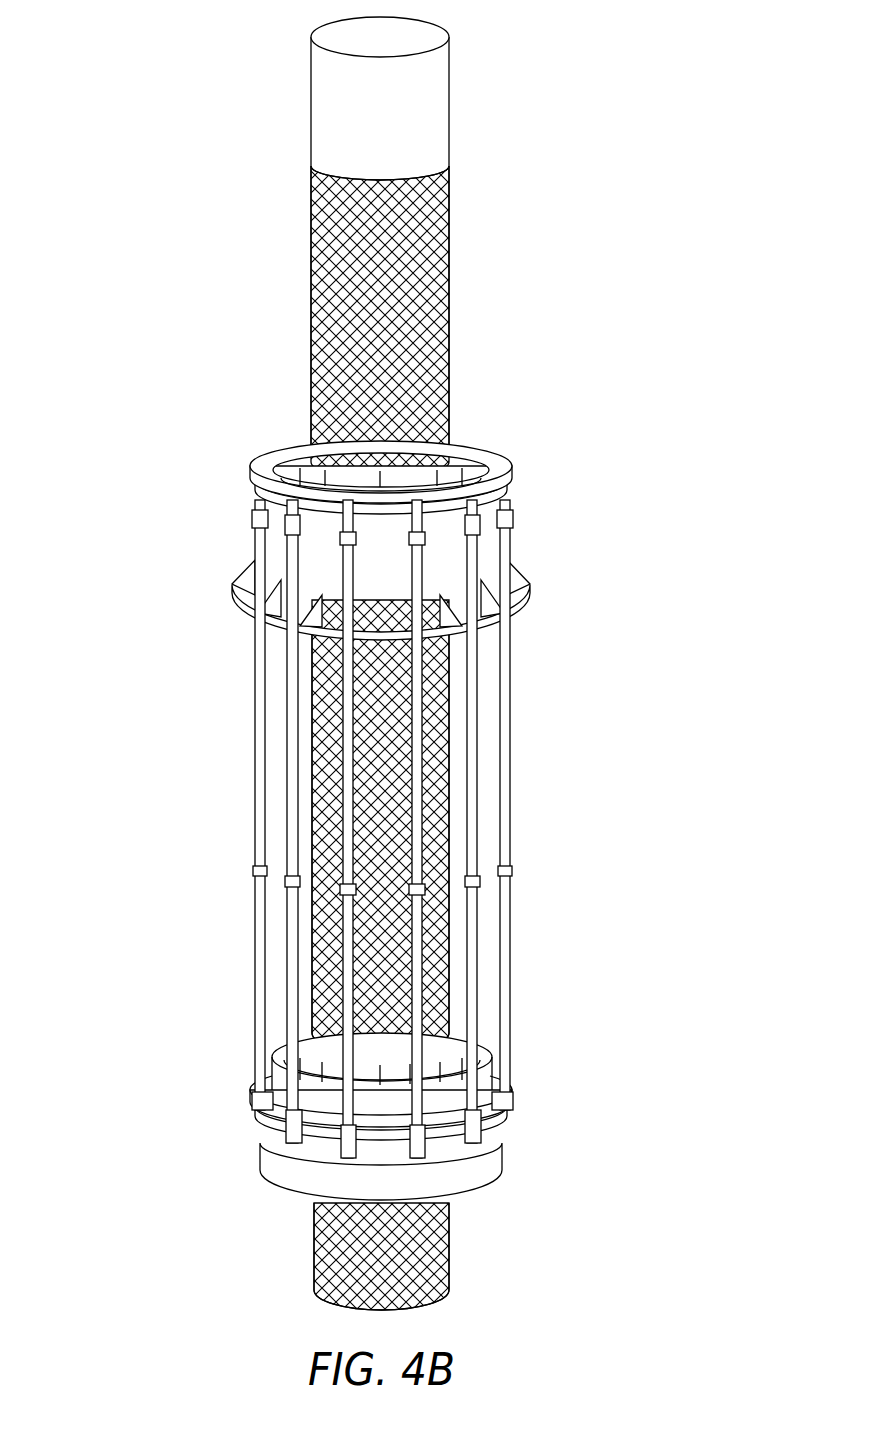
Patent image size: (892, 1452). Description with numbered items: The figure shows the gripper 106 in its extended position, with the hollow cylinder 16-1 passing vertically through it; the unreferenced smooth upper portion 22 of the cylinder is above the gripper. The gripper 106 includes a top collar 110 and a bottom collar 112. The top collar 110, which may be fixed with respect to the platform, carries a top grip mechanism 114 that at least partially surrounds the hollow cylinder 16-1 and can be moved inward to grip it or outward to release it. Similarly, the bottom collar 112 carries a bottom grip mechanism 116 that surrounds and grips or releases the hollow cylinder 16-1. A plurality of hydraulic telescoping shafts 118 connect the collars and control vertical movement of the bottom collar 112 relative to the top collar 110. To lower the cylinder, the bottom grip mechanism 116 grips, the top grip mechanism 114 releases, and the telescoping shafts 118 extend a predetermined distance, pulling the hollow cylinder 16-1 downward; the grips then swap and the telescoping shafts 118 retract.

The rod 22 is at (432, 63).
The hollow cylinder 16-1 is at (432, 262).
The gripper 106 is at (370, 800).
The top collar 110 is at (426, 495).
The bottom collar 112 is at (369, 1115).
The top grip mechanism 114 is at (424, 447).
The bottom grip mechanism 116 is at (266, 1046).
The hydraulic telescoping shafts 118 is at (293, 753).